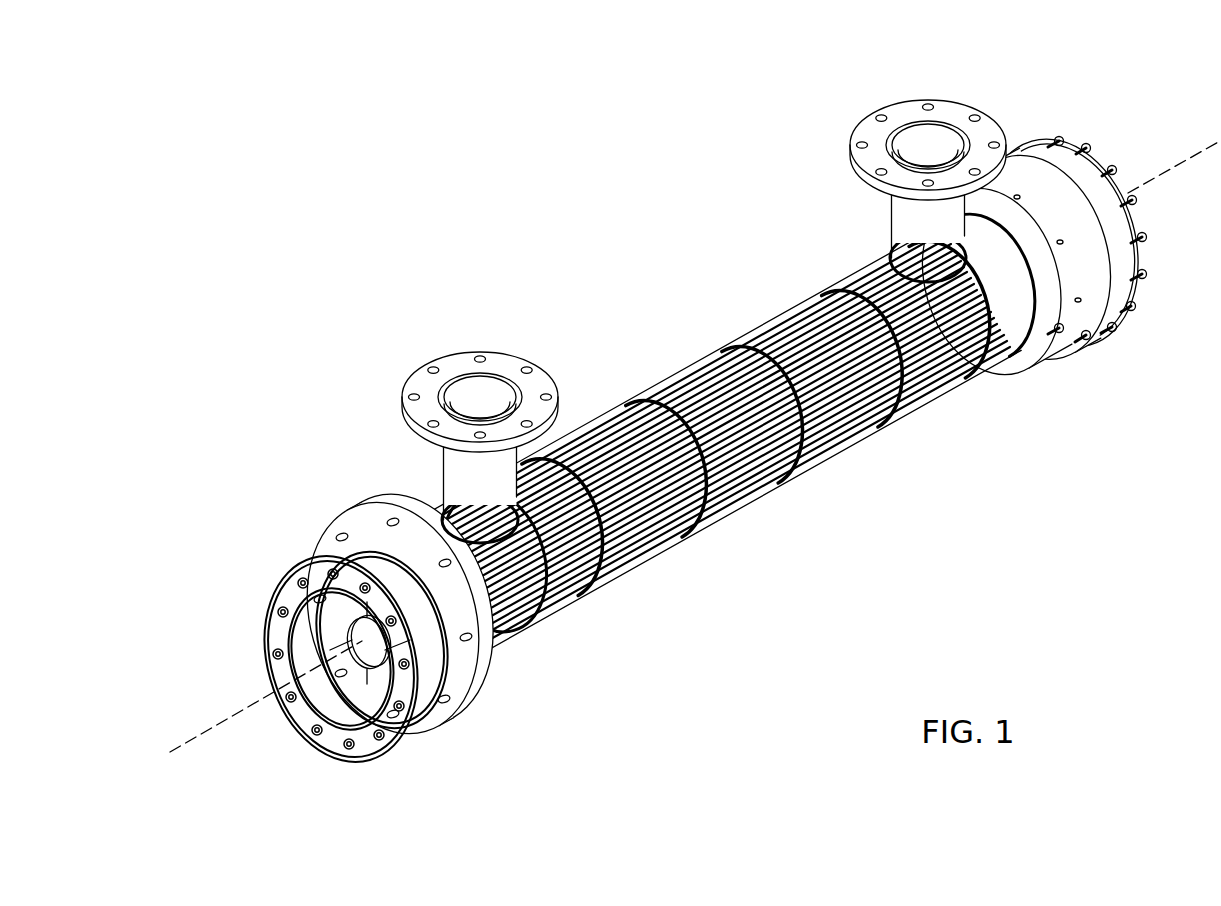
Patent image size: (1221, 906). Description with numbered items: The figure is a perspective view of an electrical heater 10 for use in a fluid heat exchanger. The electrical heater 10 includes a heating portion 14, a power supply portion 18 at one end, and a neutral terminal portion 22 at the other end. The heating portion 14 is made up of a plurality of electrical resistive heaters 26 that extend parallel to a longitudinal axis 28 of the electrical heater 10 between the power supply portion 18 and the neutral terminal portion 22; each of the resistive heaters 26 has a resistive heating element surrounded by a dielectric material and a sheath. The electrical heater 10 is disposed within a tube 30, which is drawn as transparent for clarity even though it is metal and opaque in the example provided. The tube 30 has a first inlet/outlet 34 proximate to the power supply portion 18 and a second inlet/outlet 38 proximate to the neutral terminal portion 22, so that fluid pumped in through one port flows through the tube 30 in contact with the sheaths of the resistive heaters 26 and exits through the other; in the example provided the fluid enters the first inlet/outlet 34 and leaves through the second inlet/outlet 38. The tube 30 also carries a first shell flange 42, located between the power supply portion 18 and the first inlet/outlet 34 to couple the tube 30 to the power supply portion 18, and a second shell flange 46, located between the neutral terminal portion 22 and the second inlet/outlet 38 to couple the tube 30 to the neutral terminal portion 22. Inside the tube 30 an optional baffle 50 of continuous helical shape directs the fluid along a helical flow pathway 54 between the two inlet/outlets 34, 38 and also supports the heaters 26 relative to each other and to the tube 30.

The electrical heater 10 is at (390, 186).
The heating portion 14 is at (795, 87).
The power supply portion 18 is at (260, 403).
The neutral terminal portion 22 is at (888, 47).
The electrical resistive heaters 26 is at (848, 428).
The longitudinal axis 28 is at (236, 716).
The tube 30 is at (745, 513).
The first inlet/outlet 34 is at (450, 476).
The second inlet/outlet 38 is at (890, 233).
The first shell flange 42 is at (497, 672).
The second shell flange 46 is at (1063, 338).
The baffle 50 is at (672, 540).
The helical flow pathway 54 is at (776, 485).